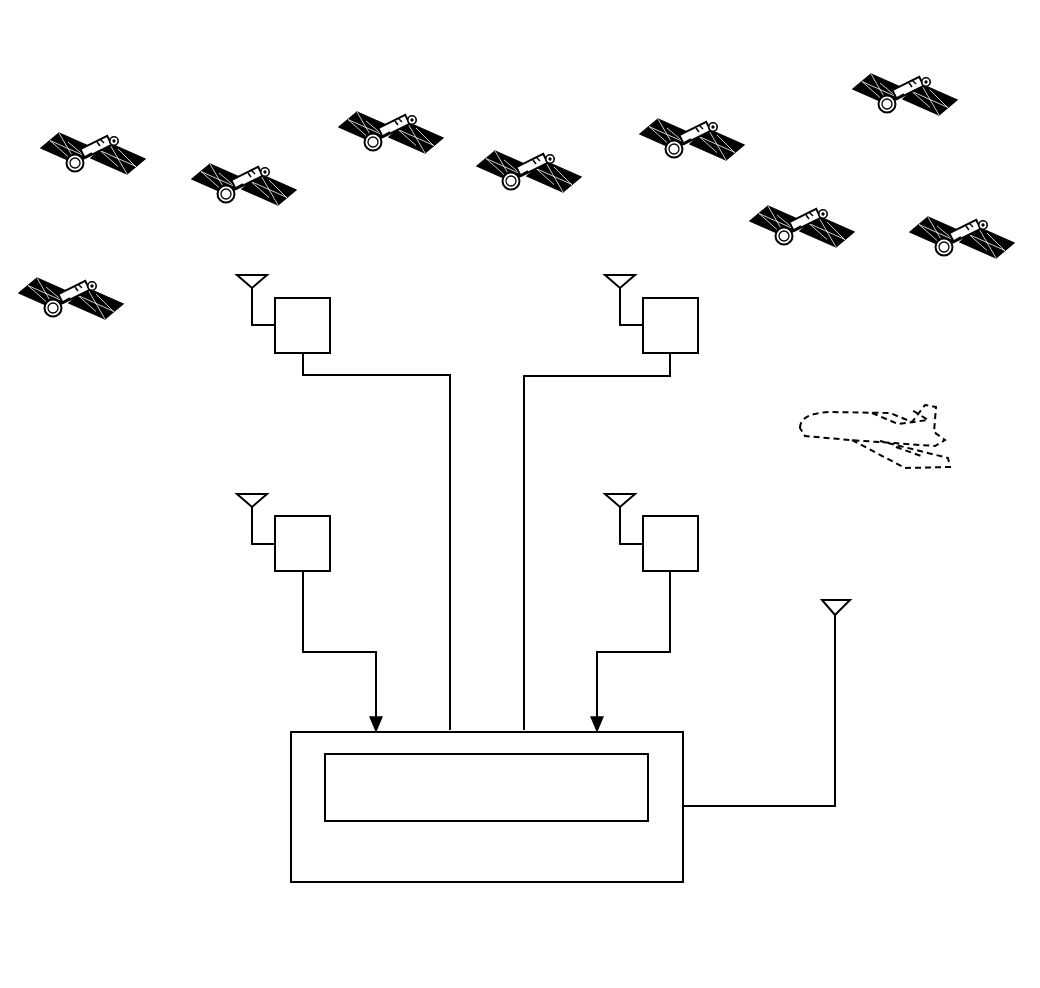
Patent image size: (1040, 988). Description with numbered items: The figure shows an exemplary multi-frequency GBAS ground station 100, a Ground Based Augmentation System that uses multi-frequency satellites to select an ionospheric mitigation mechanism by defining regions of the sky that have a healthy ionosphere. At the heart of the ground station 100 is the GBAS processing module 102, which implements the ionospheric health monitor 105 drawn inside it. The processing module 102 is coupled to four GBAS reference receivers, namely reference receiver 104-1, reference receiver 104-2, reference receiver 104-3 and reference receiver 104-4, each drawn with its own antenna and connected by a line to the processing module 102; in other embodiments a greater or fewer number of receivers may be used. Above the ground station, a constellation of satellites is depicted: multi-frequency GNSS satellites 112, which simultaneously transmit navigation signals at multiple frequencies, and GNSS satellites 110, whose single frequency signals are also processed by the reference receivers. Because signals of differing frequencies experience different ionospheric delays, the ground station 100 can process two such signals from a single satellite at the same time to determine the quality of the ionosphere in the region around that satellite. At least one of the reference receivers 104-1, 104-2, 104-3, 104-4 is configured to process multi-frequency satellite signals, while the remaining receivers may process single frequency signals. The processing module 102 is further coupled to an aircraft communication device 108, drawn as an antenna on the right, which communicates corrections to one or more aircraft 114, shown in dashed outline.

The GBAS ground station 100 is at (136, 493).
The GBAS processing module 102 is at (483, 807).
The reference receiver 104-1 is at (330, 543).
The reference receiver 104-2 is at (330, 325).
The reference receiver 104-3 is at (698, 325).
The reference receiver 104-4 is at (698, 543).
The ionospheric health monitor 105 is at (325, 786).
The aircraft communication device 108 is at (842, 605).
The GNSS satellite 110 is at (113, 137).
The multi-frequency GNSS satellite 112 is at (265, 168).
The aircraft 114 is at (938, 418).